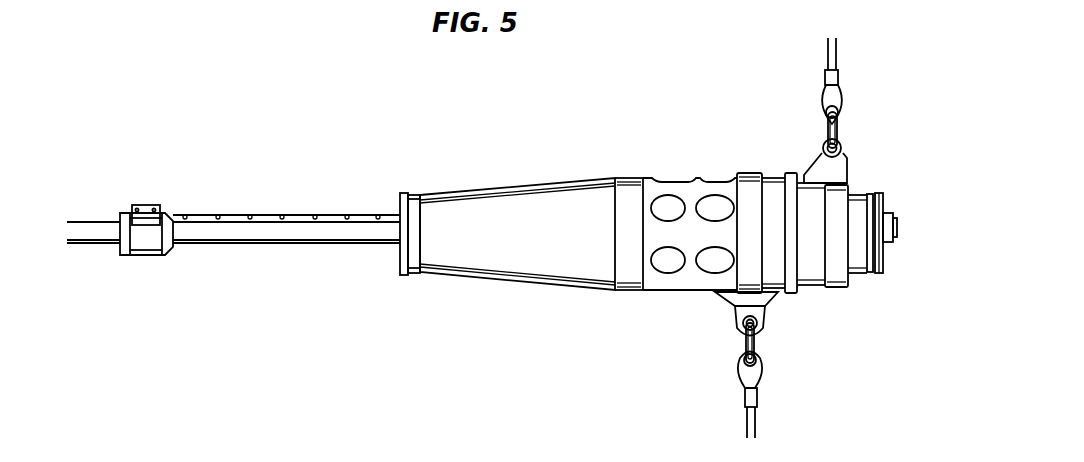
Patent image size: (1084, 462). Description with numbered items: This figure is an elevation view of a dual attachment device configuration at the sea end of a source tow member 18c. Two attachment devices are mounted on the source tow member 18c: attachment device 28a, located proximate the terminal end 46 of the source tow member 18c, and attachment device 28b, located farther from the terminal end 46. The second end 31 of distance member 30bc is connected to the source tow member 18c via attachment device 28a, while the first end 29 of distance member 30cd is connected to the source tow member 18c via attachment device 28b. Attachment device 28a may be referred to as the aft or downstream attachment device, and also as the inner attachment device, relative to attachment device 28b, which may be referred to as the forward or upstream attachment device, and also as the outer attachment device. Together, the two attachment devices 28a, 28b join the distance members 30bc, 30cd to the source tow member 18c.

The source tow member 18c is at (257, 240).
The attachment device 28b is at (687, 186).
The attachment device 28a is at (838, 278).
The terminal end 46 is at (883, 265).
The second end 31 is at (824, 133).
The distance member 30bc is at (825, 60).
The first end 29 is at (757, 340).
The distance member 30cd is at (758, 420).